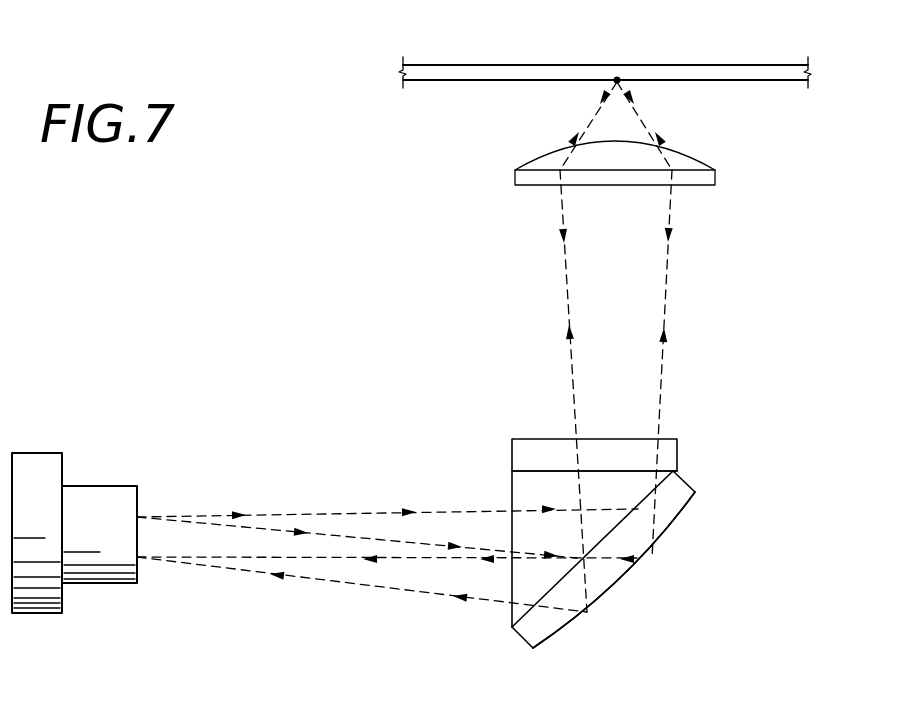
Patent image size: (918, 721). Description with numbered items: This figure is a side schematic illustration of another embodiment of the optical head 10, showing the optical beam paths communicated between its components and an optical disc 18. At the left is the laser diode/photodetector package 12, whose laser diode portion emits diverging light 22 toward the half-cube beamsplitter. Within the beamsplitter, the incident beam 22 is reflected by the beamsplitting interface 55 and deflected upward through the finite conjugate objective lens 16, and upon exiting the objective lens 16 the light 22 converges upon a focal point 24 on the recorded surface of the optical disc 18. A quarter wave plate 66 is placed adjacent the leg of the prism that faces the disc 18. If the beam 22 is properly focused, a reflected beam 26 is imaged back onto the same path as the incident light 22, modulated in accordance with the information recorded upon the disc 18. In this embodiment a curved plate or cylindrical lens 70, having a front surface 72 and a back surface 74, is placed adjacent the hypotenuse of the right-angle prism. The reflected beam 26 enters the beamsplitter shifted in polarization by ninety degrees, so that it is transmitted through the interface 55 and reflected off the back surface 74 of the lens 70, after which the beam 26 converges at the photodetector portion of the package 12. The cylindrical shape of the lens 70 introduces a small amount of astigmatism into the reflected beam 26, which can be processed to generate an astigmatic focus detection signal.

The optical head 10 is at (448, 208).
The laser diode/photodetector package 12 is at (43, 453).
The finite conjugate objective lens 16 is at (690, 163).
The optical disc 18 is at (773, 82).
The diverging light 22 is at (668, 282).
The focal point 24 is at (616, 78).
The reflected beam 26 is at (563, 268).
The beamsplitting interface 55 is at (676, 469).
The quarter wave plate 66 is at (676, 448).
The cylindrical lens 70 is at (681, 498).
The front surface 72 is at (622, 527).
The back surface 74 is at (673, 531).